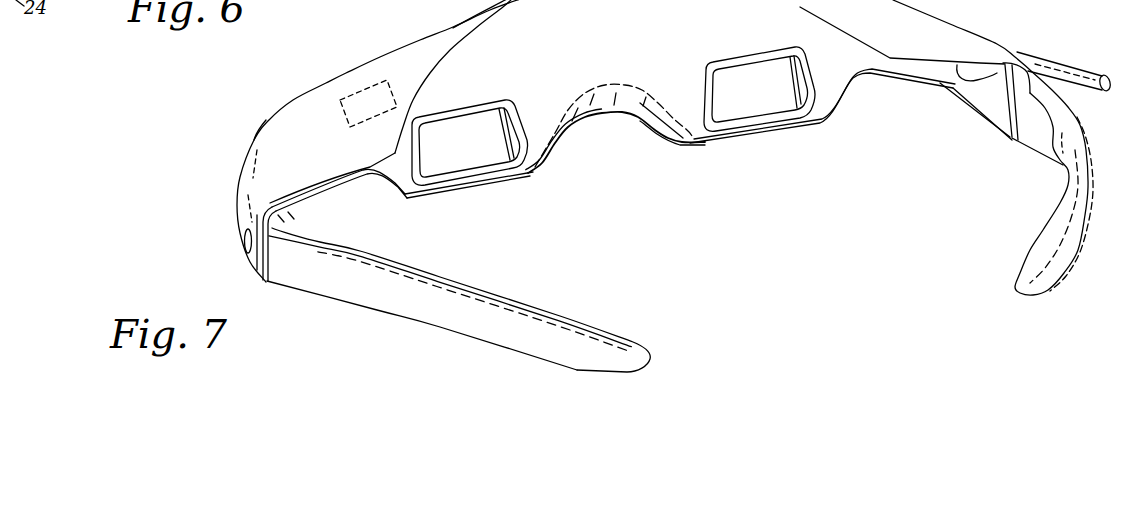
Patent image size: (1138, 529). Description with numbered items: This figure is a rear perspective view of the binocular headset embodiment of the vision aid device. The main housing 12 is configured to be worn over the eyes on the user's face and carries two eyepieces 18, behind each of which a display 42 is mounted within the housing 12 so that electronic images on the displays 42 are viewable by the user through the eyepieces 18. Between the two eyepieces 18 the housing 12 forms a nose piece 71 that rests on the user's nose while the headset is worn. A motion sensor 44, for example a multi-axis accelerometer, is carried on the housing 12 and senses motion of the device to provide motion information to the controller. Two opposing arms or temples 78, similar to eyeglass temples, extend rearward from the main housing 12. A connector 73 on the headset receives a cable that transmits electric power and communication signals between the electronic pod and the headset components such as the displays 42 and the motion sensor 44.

The housing 12 is at (650, 141).
The motion sensor 44 is at (348, 96).
The display 42 is at (458, 152).
The eyepiece 18 is at (510, 167).
The nose piece 71 is at (625, 113).
The connector 73 is at (1077, 63).
The arms/temples 78 is at (440, 313).